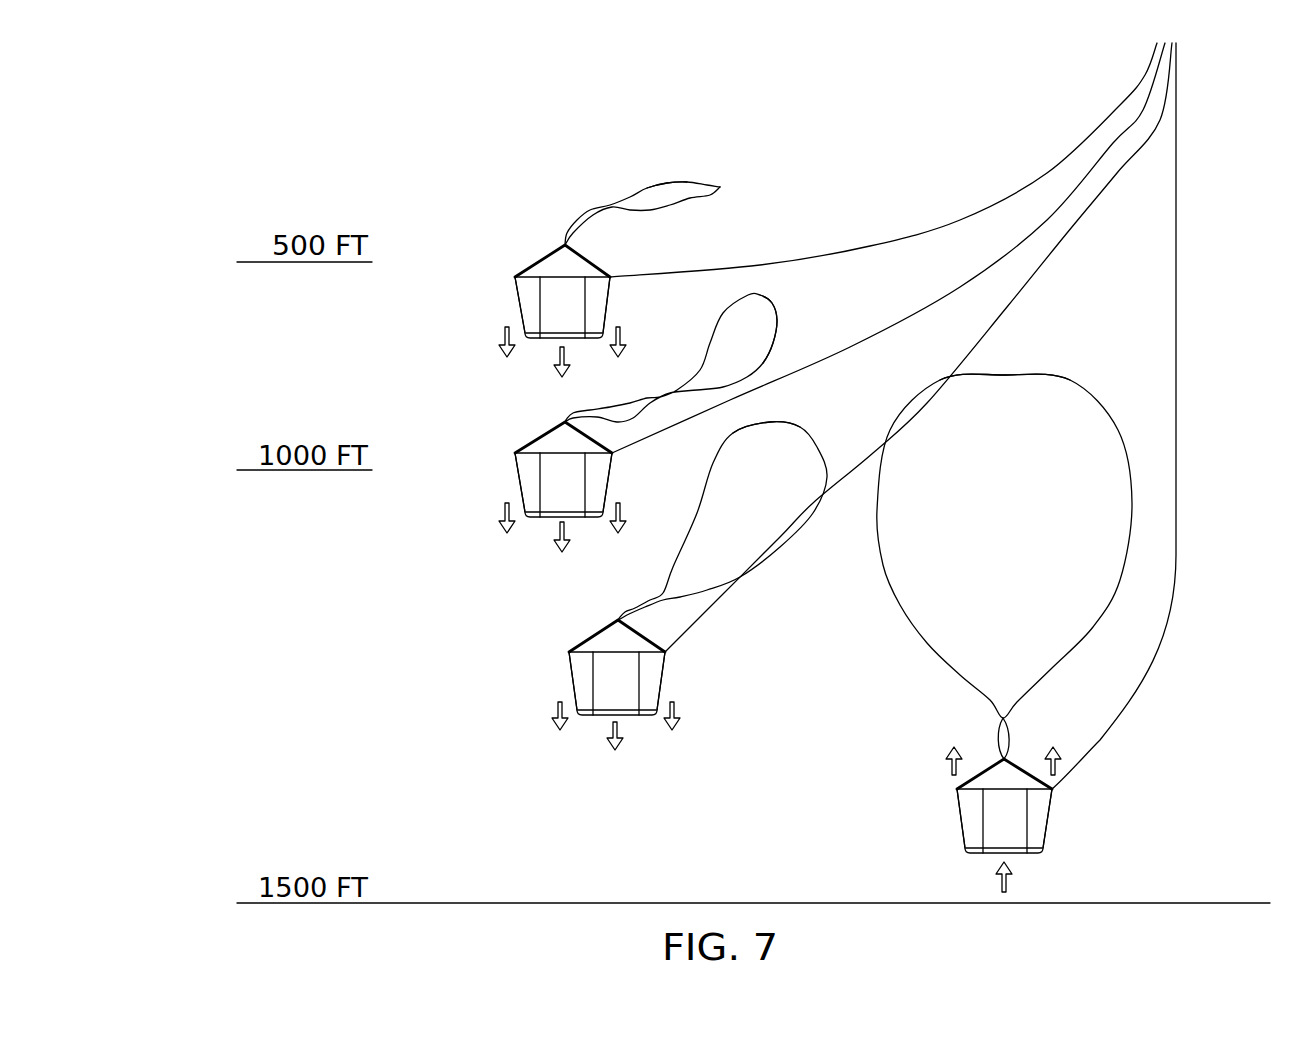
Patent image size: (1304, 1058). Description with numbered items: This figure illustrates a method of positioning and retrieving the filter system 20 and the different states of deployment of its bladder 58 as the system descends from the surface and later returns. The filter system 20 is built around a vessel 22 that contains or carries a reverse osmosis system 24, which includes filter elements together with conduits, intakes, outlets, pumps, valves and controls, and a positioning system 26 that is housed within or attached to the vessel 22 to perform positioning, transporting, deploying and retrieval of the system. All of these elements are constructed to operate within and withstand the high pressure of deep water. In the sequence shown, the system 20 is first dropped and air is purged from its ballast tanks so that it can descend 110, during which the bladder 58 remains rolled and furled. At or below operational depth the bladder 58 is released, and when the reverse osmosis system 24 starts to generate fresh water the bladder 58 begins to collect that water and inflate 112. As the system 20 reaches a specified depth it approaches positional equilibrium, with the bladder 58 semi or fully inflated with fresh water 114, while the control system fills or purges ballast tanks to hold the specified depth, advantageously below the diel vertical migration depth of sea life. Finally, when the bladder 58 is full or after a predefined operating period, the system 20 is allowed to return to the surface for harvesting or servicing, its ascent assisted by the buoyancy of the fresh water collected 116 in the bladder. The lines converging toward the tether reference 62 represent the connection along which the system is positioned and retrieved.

The filter system 20 is at (545, 163).
The vessel 22 is at (518, 307).
The reverse osmosis system 24 is at (608, 307).
The positioning system 26 is at (723, 186).
The bladder 58 is at (670, 183).
The tether 62 is at (1200, 213).
The descend 110 is at (489, 269).
The inflate 112 is at (489, 443).
The fresh water (semi or fully inflated bladder) 114 is at (542, 643).
The fresh water collected 116 is at (930, 779).